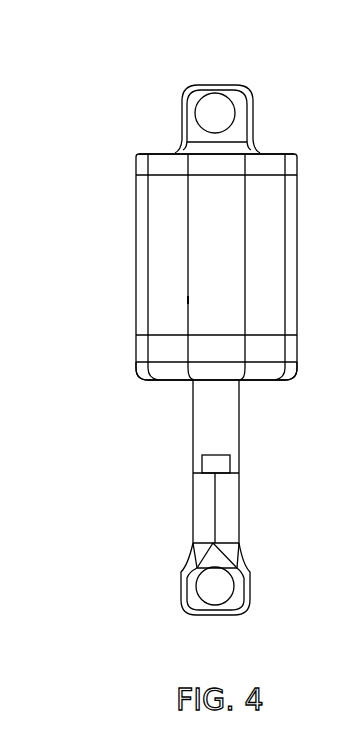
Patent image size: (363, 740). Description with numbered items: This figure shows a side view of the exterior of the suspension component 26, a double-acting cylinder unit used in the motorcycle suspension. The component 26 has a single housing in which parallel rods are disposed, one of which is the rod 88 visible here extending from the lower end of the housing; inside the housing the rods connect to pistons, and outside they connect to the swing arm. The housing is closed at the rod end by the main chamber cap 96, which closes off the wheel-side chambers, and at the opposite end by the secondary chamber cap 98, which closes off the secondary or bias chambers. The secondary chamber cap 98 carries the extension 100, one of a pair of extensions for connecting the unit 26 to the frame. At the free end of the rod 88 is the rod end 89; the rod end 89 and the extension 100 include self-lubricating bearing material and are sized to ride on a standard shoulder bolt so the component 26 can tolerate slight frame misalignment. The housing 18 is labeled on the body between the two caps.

The suspension component 26 is at (301, 141).
The cylinder body 18 is at (292, 268).
The secondary chamber cap 98 is at (297, 163).
The main chamber cap 96 is at (234, 379).
The extension 100 is at (252, 97).
The rod 88 is at (239, 442).
The rod end 89 is at (254, 562).